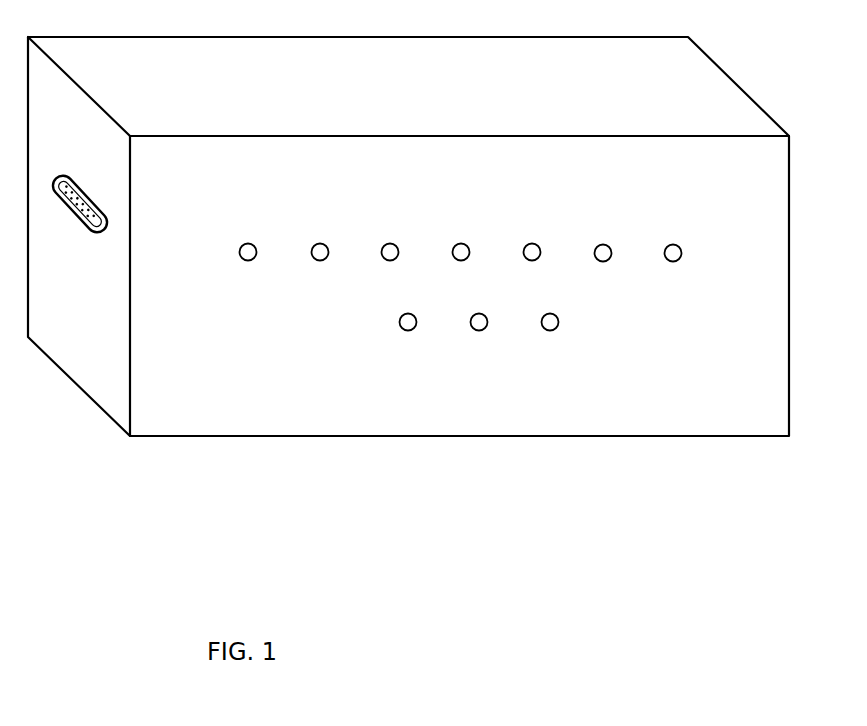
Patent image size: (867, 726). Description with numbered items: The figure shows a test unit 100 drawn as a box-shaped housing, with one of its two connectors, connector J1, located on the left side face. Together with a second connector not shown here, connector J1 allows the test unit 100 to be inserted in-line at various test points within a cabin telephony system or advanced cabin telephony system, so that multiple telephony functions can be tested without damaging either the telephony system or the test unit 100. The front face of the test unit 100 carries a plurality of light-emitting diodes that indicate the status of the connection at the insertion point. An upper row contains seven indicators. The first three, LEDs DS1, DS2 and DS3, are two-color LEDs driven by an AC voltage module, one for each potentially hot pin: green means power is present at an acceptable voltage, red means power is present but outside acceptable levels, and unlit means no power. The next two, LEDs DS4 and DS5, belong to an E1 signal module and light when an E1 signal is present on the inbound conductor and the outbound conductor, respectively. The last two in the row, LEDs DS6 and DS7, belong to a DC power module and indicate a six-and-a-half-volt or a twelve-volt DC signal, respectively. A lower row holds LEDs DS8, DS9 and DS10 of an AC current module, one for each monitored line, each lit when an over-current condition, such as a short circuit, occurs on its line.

The test unit 100 is at (682, 465).
The connector J1 is at (82, 240).
The two-color LED DS1 is at (242, 244).
The two-color LED DS2 is at (313, 244).
The two-color LED DS3 is at (384, 244).
The LED DS4 is at (455, 243).
The LED DS5 is at (540, 244).
The LED DS6 is at (611, 245).
The LED DS7 is at (682, 247).
The LED DS8 is at (400, 330).
The LED DS9 is at (470, 331).
The LED DS10 is at (558, 330).